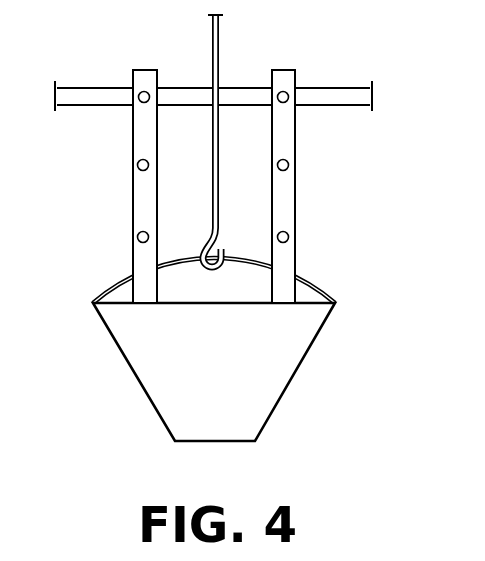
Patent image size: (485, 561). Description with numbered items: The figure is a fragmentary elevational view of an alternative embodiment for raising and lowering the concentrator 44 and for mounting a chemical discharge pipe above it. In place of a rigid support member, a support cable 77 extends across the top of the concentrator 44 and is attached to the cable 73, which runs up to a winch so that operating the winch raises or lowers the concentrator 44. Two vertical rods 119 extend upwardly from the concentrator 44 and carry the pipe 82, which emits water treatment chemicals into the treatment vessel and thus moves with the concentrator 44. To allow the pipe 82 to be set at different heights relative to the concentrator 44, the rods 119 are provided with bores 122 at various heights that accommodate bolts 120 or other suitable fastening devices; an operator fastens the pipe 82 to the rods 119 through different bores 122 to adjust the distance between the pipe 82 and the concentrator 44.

The concentrator 44 is at (263, 398).
The cable 73 is at (220, 38).
The support cable 77 is at (128, 279).
The pipe 82 is at (85, 88).
The vertical rods 119 is at (133, 133).
The bolts 120 is at (136, 91).
The bores 122 is at (137, 168).